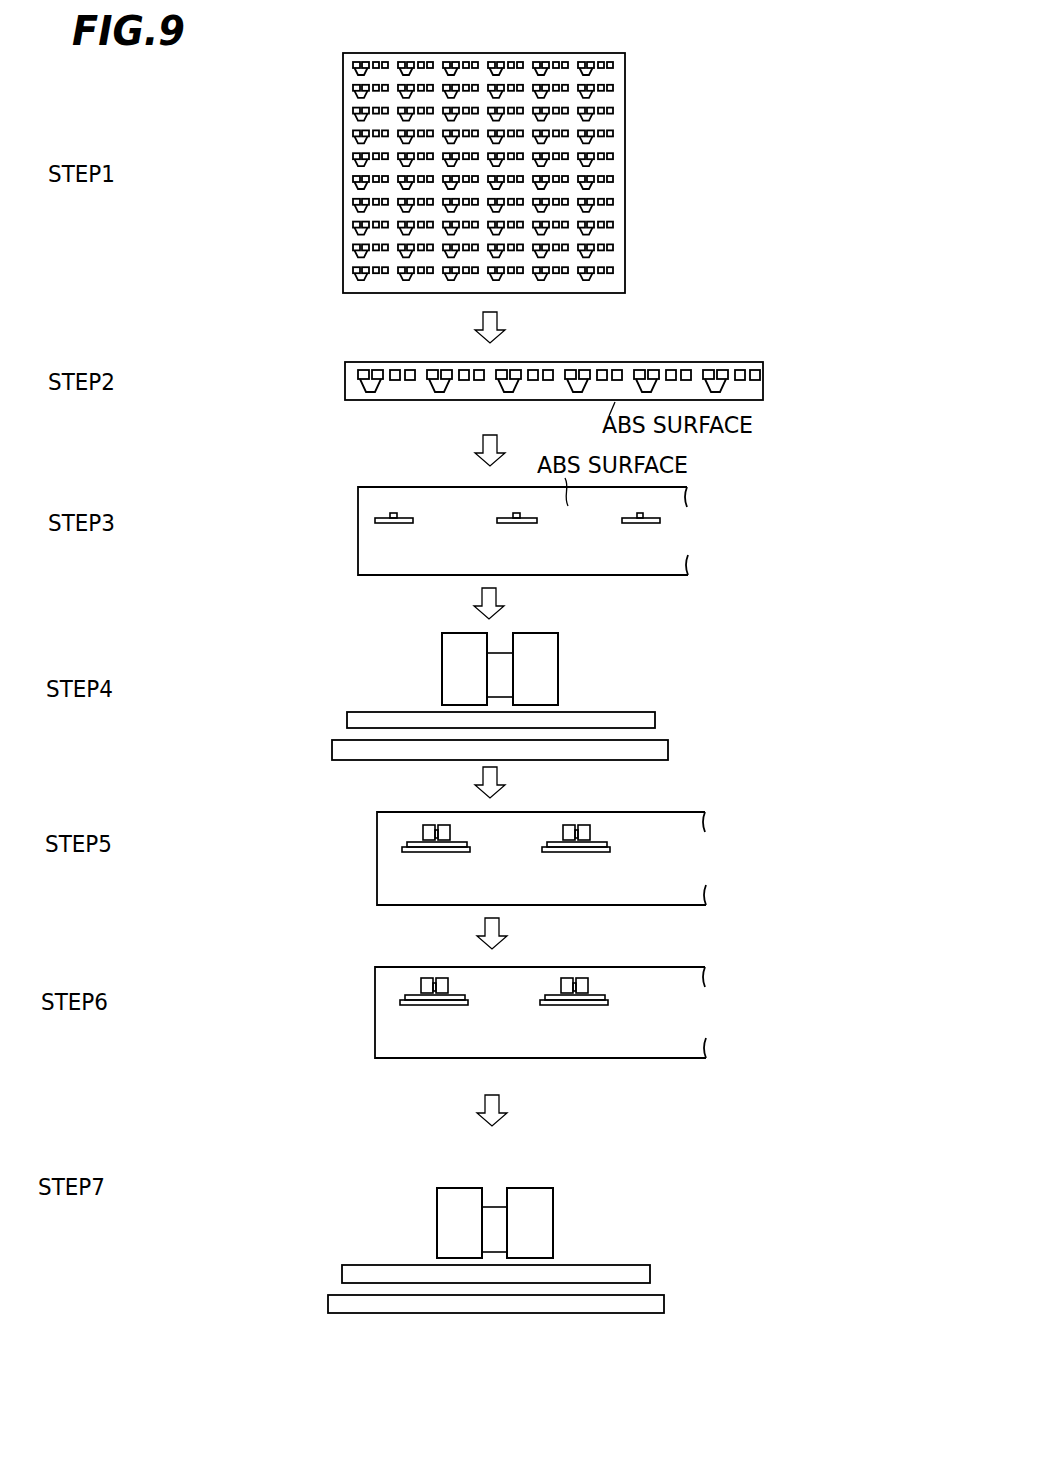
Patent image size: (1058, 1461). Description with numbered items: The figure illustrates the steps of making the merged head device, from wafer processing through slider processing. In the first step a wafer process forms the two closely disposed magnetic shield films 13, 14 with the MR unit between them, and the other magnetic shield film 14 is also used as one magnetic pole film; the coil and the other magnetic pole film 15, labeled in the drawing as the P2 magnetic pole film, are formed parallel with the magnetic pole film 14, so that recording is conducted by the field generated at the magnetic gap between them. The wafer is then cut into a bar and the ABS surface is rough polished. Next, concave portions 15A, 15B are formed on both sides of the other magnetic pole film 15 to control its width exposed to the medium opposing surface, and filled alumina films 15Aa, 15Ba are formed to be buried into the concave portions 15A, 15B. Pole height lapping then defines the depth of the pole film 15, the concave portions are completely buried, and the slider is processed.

The concave portion 15B is at (308, 1200).
The filled alumina film 15Ba is at (440, 1222).
The concave portion 15A is at (710, 1207).
The filled alumina film 15Aa is at (543, 1247).
The other magnetic pole film 15 is at (529, 1200).
The other magnetic shield film 14 is at (342, 1270).
The magnetic shield film 13 is at (497, 1307).
The P2 magnetic pole film P2 is at (500, 675).